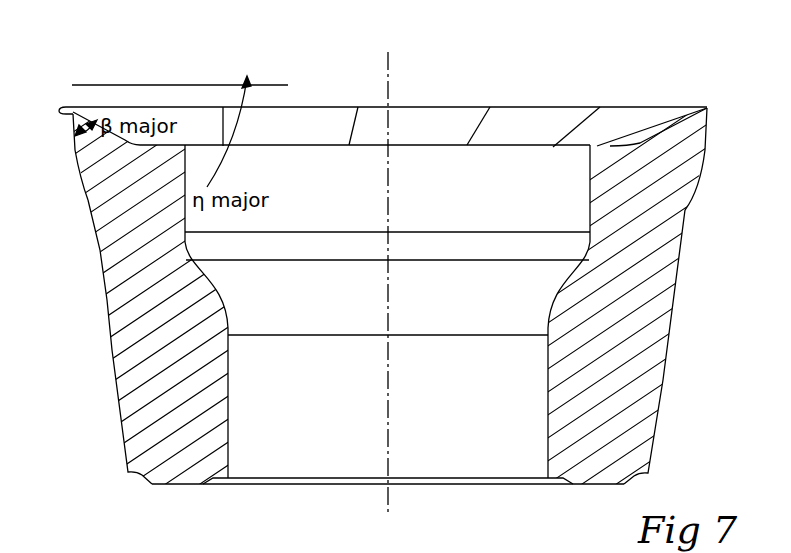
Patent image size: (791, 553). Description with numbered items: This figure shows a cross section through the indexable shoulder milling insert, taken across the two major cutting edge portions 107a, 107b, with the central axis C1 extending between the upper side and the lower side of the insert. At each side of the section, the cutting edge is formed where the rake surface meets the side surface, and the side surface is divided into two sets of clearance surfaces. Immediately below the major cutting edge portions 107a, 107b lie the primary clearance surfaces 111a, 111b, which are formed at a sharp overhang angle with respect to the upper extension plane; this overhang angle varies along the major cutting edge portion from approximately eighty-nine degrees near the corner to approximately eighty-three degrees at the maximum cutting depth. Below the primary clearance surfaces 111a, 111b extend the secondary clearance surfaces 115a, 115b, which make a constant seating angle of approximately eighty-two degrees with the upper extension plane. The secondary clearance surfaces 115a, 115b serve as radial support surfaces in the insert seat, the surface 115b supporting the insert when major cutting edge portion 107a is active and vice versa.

The major cutting edge portion 107a is at (61, 104).
The major cutting edge portion 107b is at (711, 104).
The primary clearance surface 111a is at (73, 122).
The primary clearance surface 111b is at (705, 135).
The secondary clearance surface 115a is at (110, 332).
The secondary clearance surface 115b is at (667, 332).
The central axis C1 is at (405, 281).